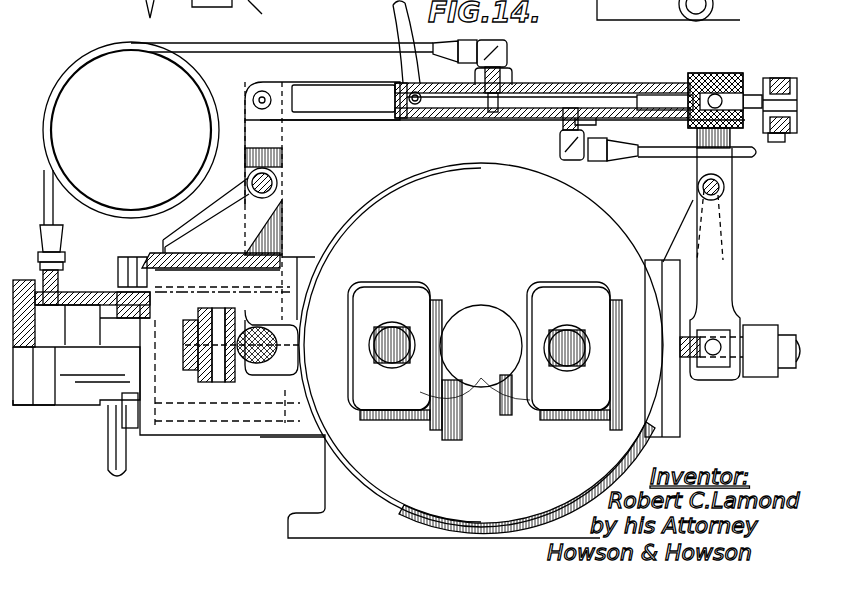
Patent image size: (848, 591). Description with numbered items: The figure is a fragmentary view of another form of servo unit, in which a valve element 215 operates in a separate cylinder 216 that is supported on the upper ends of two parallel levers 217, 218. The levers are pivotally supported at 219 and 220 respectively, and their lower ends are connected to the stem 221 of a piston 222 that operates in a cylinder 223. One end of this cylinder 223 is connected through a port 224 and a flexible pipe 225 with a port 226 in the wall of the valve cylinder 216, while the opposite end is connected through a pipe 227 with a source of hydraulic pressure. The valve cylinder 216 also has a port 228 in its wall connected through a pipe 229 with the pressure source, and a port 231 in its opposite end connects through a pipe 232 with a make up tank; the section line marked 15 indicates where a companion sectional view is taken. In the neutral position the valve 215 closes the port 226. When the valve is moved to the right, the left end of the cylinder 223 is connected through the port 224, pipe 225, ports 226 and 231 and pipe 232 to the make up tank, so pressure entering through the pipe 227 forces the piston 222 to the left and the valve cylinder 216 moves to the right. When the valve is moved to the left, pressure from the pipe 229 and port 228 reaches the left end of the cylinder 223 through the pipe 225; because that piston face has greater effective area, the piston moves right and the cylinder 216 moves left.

The valve element 215 is at (648, 93).
The cylinder 216 is at (470, 108).
The lever 217 is at (280, 135).
The lever 218 is at (698, 164).
The pivot 219 is at (278, 185).
The pivot 220 is at (700, 190).
The stem 221 is at (298, 362).
The piston 222 is at (78, 315).
The cylinder 223 is at (72, 392).
The port 224 is at (50, 305).
The flexible pipe 225 is at (178, 62).
The port 226 is at (497, 80).
The pipe 227 is at (128, 452).
The port 228 is at (572, 110).
The pipe 229 is at (746, 158).
The port 231 is at (415, 106).
The pipe 232 is at (416, 70).
The section line 15 is at (149, 270).